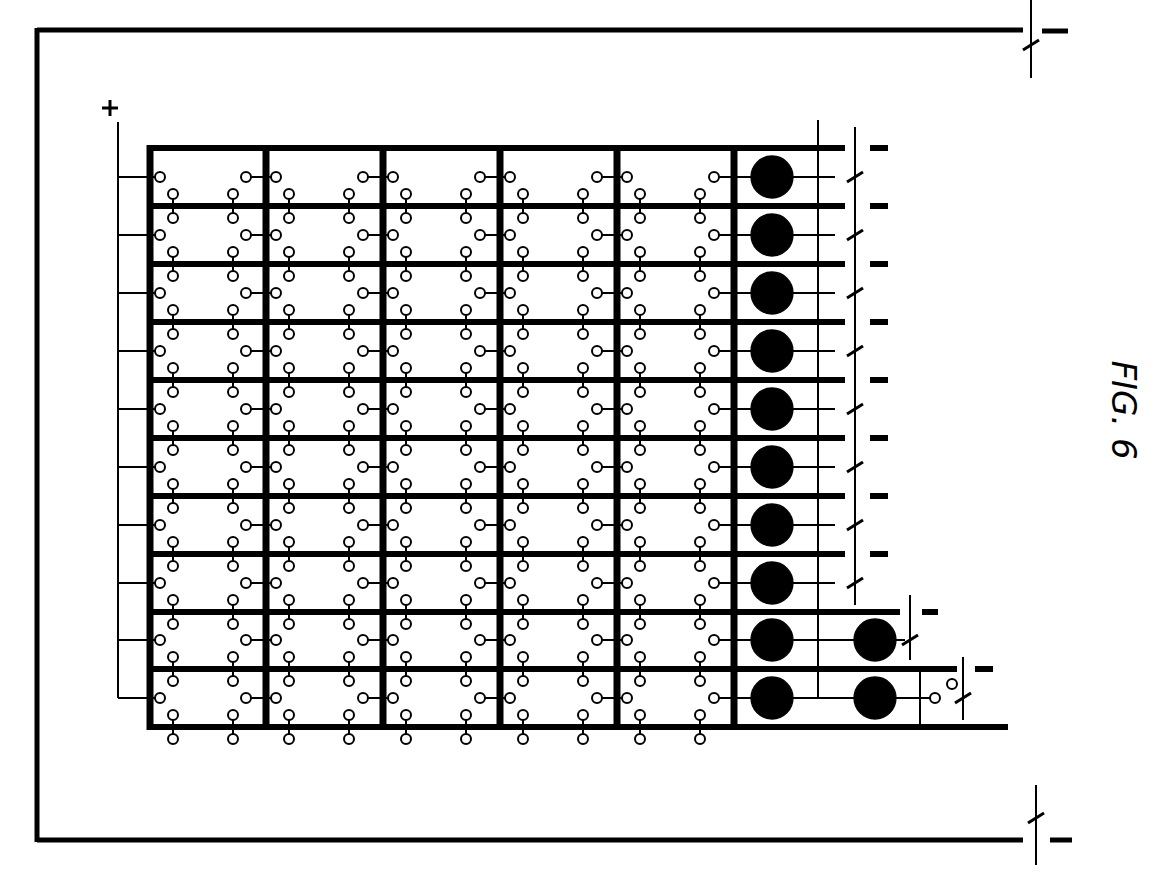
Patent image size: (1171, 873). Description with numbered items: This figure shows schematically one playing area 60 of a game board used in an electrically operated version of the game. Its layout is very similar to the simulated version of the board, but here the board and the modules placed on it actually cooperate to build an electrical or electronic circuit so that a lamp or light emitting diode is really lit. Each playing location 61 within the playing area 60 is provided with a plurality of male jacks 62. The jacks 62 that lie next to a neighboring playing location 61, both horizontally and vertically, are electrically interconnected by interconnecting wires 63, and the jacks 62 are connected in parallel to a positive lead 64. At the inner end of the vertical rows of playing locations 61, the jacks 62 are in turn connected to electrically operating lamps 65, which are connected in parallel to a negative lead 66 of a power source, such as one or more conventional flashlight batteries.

The playing area 60 is at (533, 432).
The playing location 61 is at (190, 293).
The male jacks 62 is at (155, 183).
The interconnecting wires 63 is at (332, 676).
The positive lead 64 is at (110, 164).
The electrically operating lamps 65 is at (793, 462).
The negative lead 66 is at (820, 128).